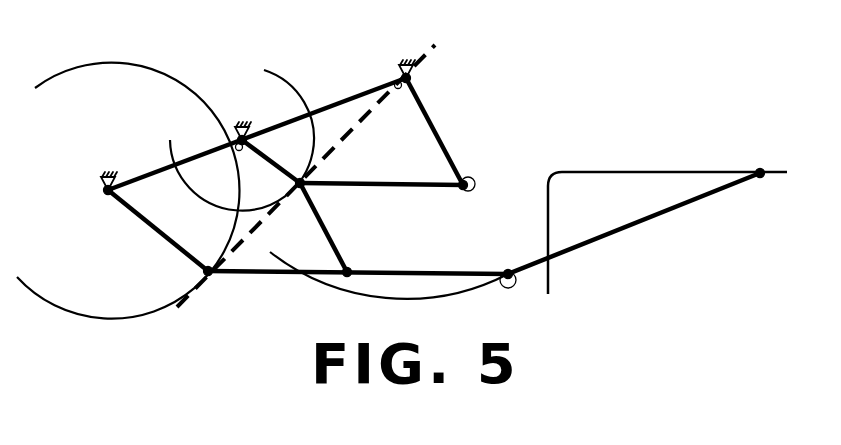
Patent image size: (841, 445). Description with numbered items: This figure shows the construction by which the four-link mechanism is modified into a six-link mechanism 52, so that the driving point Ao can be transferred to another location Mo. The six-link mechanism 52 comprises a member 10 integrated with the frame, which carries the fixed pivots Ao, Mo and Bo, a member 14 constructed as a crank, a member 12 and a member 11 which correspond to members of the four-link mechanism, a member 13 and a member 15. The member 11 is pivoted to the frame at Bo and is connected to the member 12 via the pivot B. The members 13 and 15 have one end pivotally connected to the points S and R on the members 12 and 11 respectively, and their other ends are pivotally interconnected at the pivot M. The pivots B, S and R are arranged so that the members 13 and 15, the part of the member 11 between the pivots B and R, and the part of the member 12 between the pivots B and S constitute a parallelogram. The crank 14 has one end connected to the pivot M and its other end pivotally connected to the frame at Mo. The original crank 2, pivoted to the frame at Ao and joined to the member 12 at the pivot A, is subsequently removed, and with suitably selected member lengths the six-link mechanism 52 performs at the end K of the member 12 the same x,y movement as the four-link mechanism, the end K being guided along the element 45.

The crank 2 is at (172, 242).
The member integrated with the frame 10 is at (341, 101).
The member 11 is at (447, 149).
The member 12 is at (577, 247).
The member 13 is at (328, 237).
The crank 14 is at (277, 166).
The member 15 is at (398, 187).
The guide / bracket 45 is at (630, 170).
The six-link mechanism 52 is at (270, 297).
The driving point Ao is at (102, 192).
The frame pivot of the crank Mo is at (234, 122).
The fixed pivot Bo is at (392, 75).
The pivot M is at (299, 197).
The pivot R is at (476, 184).
The joint A is at (212, 275).
The pivot S is at (352, 267).
The pivot B is at (508, 289).
The end of the member K is at (760, 168).